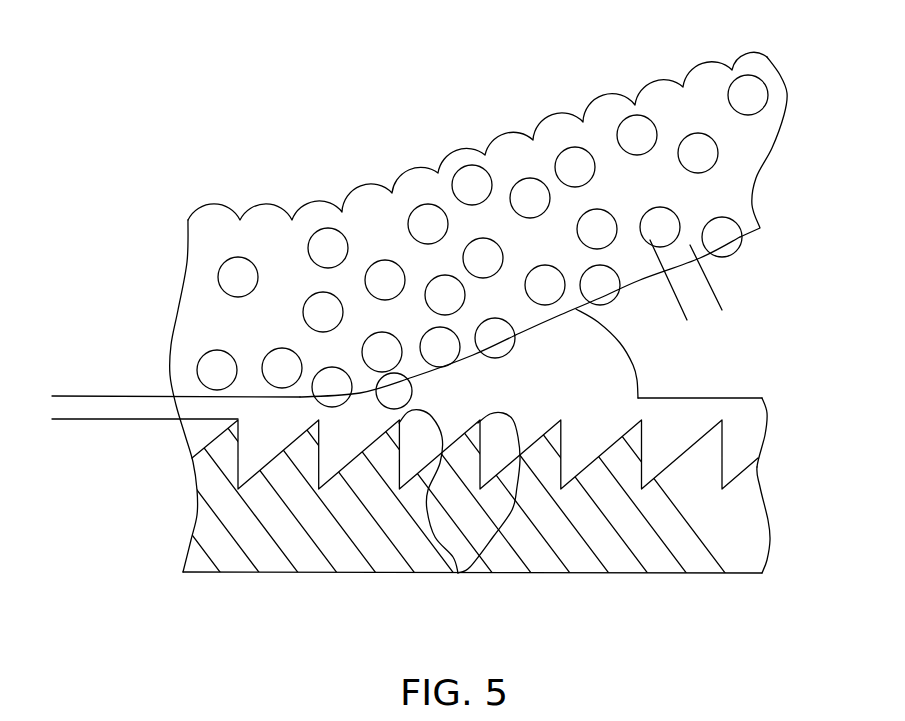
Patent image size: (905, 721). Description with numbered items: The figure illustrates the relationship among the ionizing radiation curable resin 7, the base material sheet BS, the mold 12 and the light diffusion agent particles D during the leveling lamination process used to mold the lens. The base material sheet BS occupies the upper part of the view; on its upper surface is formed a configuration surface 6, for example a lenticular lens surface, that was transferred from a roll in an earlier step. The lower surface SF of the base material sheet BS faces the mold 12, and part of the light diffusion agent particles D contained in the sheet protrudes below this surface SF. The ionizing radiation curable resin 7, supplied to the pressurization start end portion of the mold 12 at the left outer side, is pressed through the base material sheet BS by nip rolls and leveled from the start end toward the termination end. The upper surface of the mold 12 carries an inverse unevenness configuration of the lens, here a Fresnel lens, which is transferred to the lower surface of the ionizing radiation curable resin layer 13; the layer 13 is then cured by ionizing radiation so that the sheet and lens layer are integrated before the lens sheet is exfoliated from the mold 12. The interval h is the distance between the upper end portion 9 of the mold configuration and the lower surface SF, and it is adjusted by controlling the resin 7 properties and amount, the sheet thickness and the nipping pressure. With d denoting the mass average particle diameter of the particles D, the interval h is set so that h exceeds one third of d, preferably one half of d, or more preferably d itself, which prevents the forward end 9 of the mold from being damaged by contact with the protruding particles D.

The configuration surface 6 is at (457, 143).
The ionizing radiation curable resin 7 is at (615, 373).
The upper end portion of the mold configuration 9 is at (458, 573).
The mold 12 is at (755, 538).
The ionizing radiation curable resin layer 13 is at (753, 413).
The light diffusion agent particles D is at (688, 134).
The mass average particle diameter d is at (768, 268).
The interval h is at (70, 335).
The lower surface of the base material sheet SF is at (385, 410).
The base material sheet BS is at (785, 90).